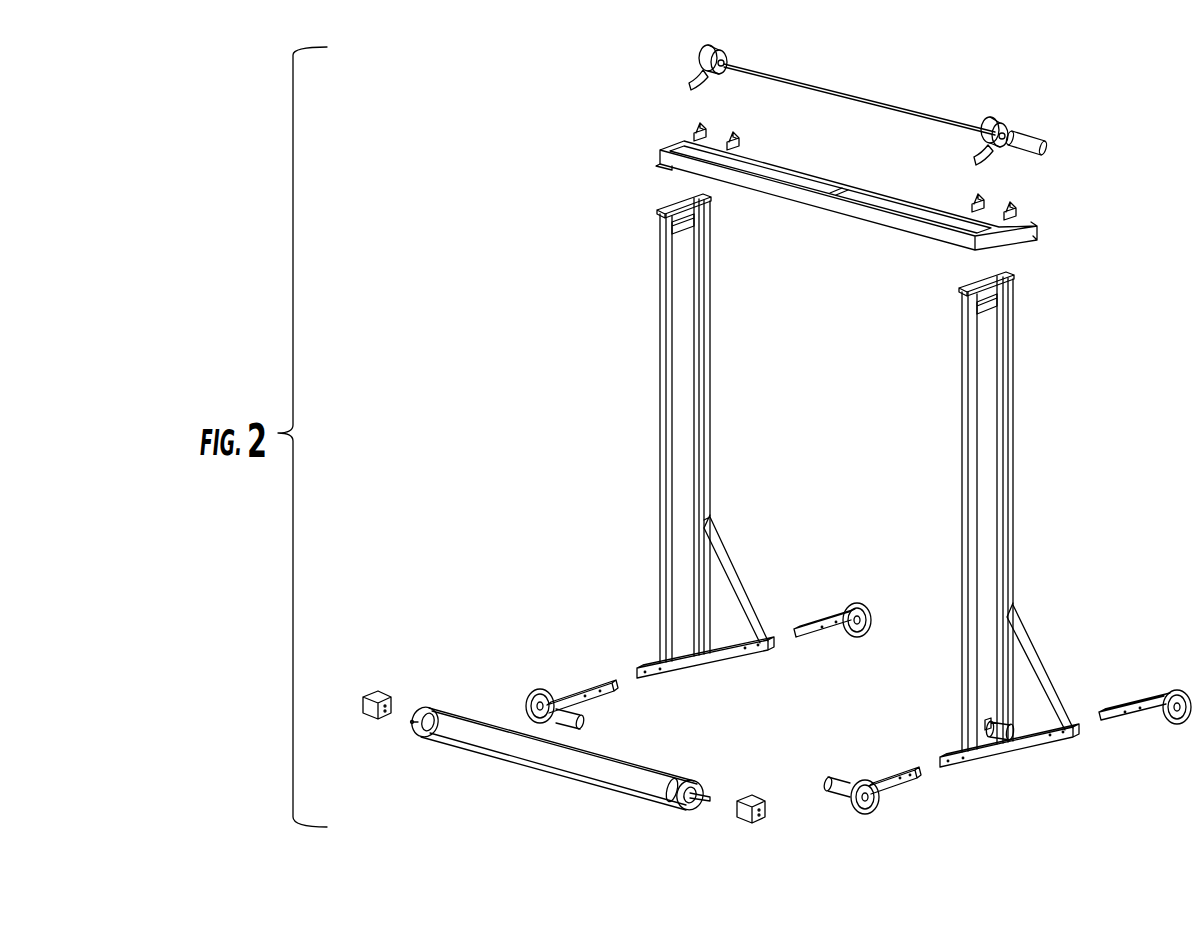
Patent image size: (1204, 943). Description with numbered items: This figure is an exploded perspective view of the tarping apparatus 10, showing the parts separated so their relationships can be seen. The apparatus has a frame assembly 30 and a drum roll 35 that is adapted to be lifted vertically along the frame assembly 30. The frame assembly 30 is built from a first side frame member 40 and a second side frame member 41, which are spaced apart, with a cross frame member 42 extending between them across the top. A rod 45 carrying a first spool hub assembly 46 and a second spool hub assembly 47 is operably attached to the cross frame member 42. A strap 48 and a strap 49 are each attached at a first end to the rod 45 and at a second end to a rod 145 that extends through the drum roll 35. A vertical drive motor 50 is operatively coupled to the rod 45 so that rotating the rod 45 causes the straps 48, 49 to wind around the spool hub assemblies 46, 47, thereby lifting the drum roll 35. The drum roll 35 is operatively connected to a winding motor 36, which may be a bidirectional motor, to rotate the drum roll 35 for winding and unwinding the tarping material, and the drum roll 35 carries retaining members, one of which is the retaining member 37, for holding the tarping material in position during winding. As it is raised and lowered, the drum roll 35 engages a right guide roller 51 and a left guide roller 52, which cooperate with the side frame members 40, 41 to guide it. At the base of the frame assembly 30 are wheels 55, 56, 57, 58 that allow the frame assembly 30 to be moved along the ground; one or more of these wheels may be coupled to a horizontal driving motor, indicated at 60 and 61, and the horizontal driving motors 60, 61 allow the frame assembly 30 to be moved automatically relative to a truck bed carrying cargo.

The tarping apparatus 10 is at (1078, 197).
The frame assembly 30 is at (648, 246).
The drum roll 35 is at (545, 765).
The winding motor 36 is at (1003, 746).
The retaining member 37 is at (668, 806).
The first side frame member 40 is at (1010, 385).
The second side frame member 41 is at (659, 424).
The cross frame member 42 is at (887, 183).
The rod 45 is at (838, 90).
The first spool hub assembly 46 is at (1003, 126).
The second spool hub assembly 47 is at (720, 65).
The strap 48 is at (965, 160).
The strap 49 is at (687, 80).
The vertical drive motor 50 is at (1038, 136).
The right guide roller 51 is at (750, 795).
The left guide roller 52 is at (360, 700).
The wheel 55 is at (878, 795).
The wheel 56 is at (1165, 722).
The wheel 57 is at (533, 700).
The wheel 58 is at (858, 606).
The horizontal driving motor 60 is at (832, 786).
The horizontal driving motor 61 is at (572, 717).
The rod 145 is at (702, 792).